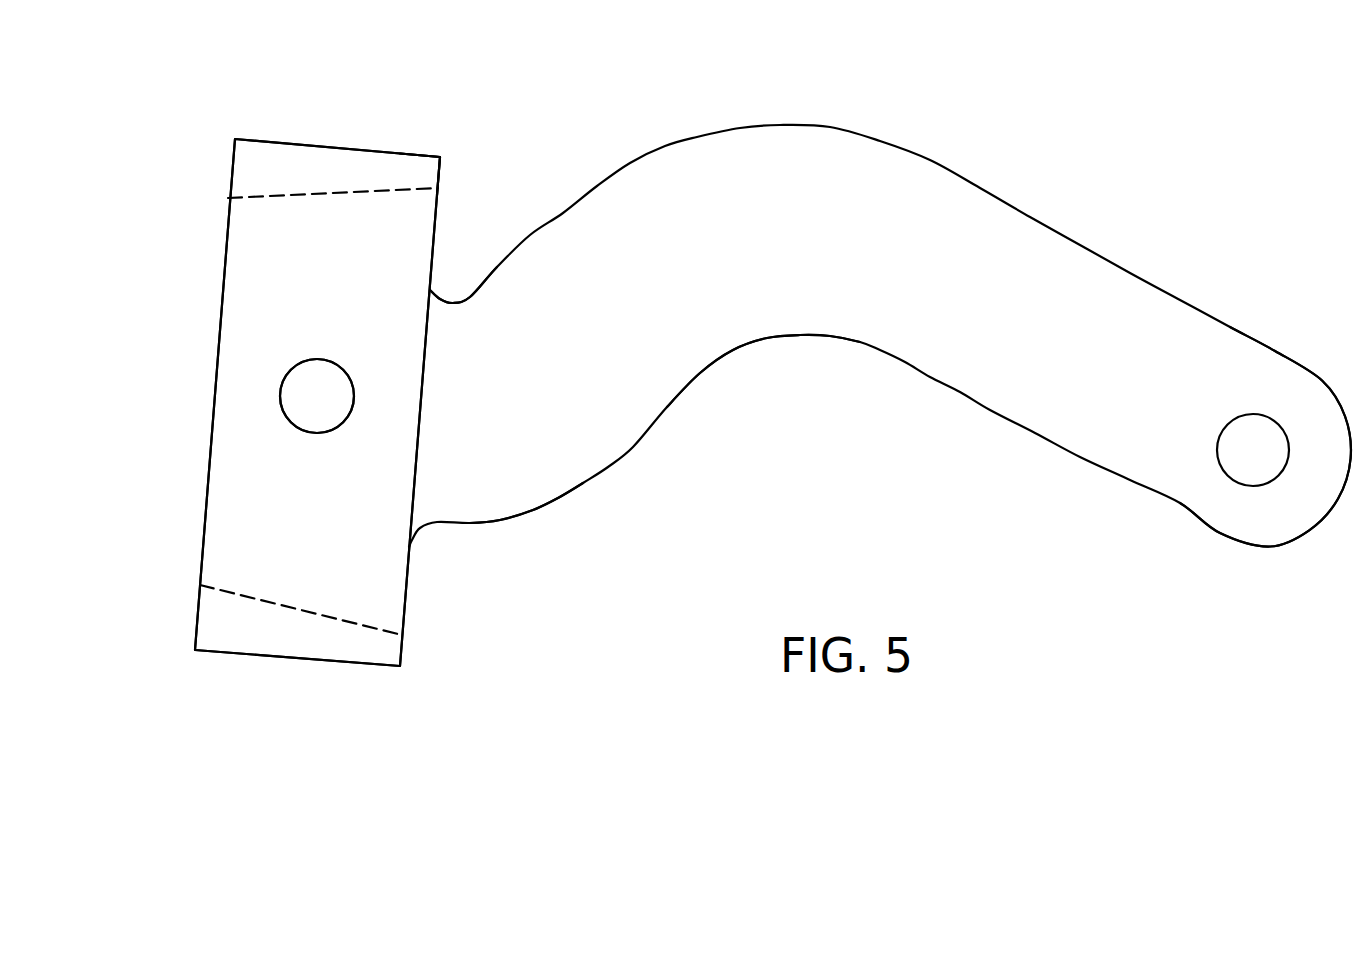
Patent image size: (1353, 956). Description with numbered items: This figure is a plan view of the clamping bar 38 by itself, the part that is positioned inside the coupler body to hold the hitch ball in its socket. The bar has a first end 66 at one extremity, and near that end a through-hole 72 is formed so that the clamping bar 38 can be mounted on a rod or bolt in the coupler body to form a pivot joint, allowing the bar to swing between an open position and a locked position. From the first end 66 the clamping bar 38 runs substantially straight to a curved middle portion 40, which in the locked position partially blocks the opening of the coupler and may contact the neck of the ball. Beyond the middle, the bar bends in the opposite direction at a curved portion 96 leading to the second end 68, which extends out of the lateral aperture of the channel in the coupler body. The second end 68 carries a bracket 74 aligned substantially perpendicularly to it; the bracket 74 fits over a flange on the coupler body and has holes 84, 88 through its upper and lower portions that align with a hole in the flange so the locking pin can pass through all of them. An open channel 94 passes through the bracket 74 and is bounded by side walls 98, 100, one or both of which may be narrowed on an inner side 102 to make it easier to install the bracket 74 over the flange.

The clamping bar 38 is at (607, 180).
The curved middle portion 40 is at (797, 337).
The first end 66 is at (1173, 477).
The second end 68 is at (432, 290).
The through-hole 72 is at (1237, 415).
The bracket 74 is at (225, 275).
The hole 84 is at (314, 414).
The hole 88 is at (303, 433).
The open channel 94 is at (187, 504).
The curved portion 96 is at (527, 492).
The side wall 98 is at (340, 193).
The side wall 100 is at (278, 605).
The inner side 102 is at (440, 192).